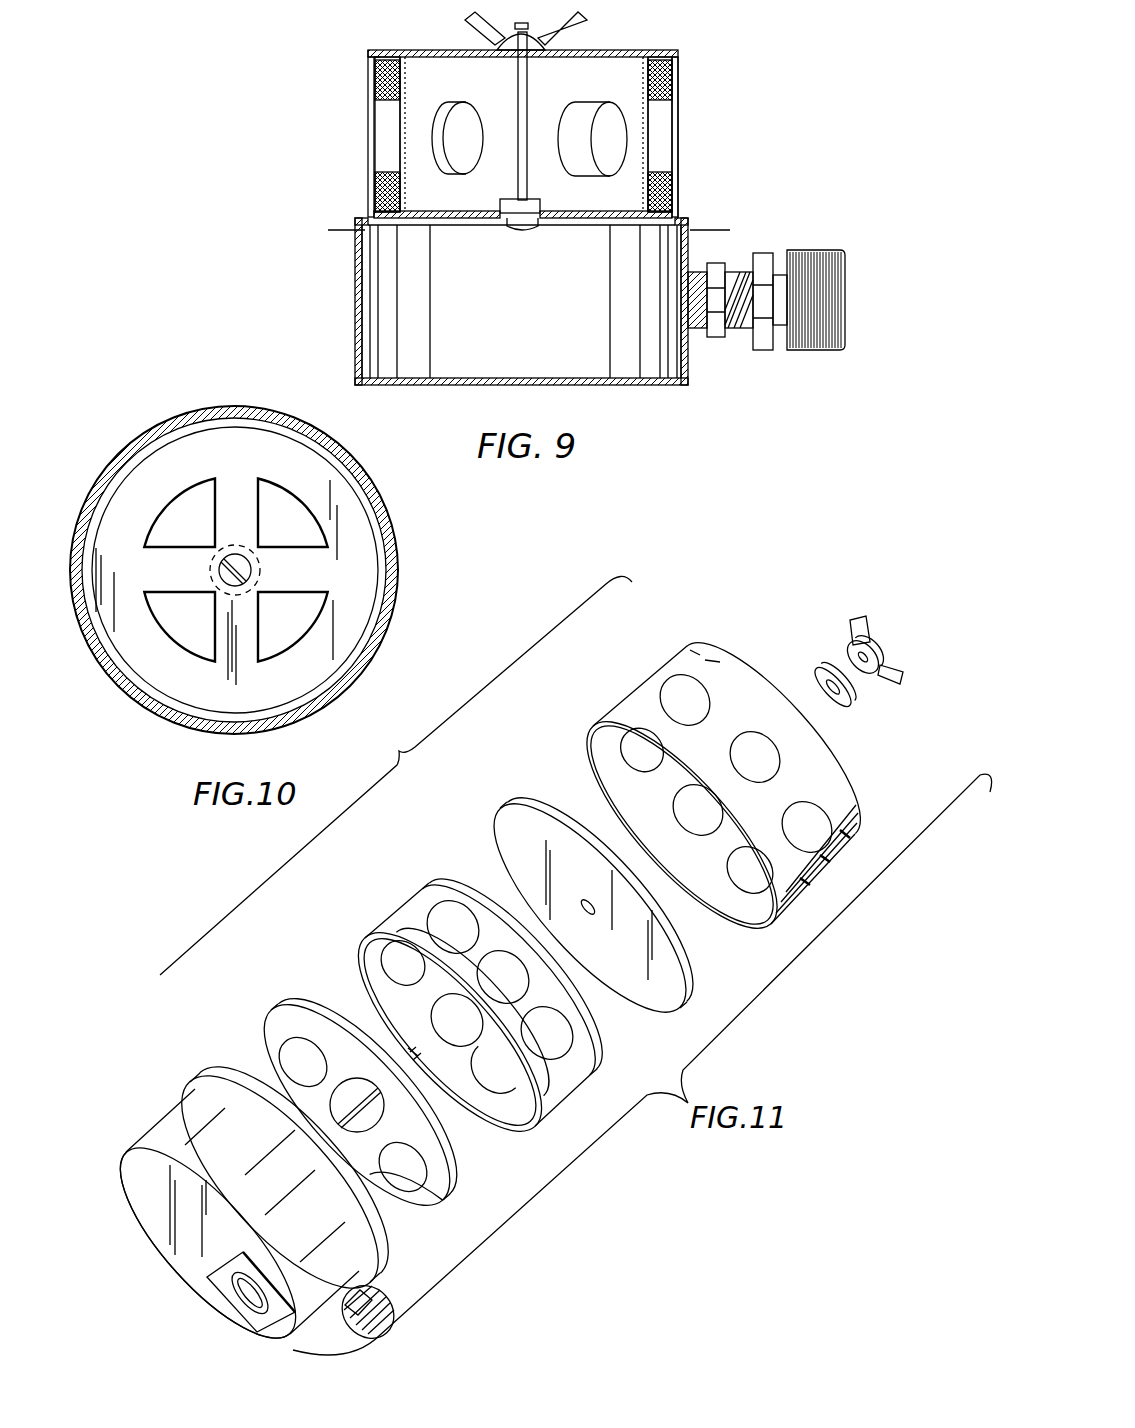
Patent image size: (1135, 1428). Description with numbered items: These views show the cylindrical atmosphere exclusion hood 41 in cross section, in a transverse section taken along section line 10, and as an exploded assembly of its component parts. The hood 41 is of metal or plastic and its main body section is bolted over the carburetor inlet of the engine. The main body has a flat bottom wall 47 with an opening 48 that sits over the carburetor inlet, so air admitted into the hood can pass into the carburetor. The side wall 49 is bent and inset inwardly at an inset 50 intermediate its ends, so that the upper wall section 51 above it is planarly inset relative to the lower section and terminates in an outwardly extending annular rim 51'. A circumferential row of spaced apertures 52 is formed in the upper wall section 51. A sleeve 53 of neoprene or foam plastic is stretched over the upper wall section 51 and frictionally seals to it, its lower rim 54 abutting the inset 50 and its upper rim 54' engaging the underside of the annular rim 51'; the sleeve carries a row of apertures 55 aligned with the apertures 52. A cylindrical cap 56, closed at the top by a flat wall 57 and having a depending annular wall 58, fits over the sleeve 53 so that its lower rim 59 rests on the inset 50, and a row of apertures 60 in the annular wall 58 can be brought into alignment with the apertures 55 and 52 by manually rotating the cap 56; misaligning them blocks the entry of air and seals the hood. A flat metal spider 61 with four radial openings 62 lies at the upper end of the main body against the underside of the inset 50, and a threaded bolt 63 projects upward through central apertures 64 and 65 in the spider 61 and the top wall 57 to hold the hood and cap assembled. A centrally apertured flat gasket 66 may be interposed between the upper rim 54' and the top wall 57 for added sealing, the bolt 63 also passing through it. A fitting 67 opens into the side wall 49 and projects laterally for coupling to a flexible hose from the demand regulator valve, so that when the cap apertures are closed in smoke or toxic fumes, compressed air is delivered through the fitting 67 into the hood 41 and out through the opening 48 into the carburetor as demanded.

In FIG. 9, the section line 10 is at (336, 232).
In FIG. 9, the cylindrical hood 41 is at (720, 137).
In FIG. 11, the cylindrical hood 41 is at (576, 965).
In FIG. 9, the flat bottom wall 47 is at (570, 386).
In FIG. 11, the flat bottom wall 47 is at (145, 1175).
In FIG. 9, the opening 48 is at (638, 387).
In FIG. 11, the opening 48 is at (248, 1305).
In FIG. 9, the side wall 49 is at (355, 305).
In FIG. 11, the side wall 49 is at (253, 1152).
In FIG. 11, the inset 50 is at (240, 1075).
In FIG. 11, the upper wall section 51 is at (361, 1082).
In FIG. 11, the annular rim 51' is at (423, 1190).
In FIG. 9, the apertures 52 is at (402, 145).
In FIG. 11, the apertures 52 is at (440, 1187).
In FIG. 11, the sleeve 53 is at (418, 895).
In FIG. 11, the lower rim 54 is at (459, 1035).
In FIG. 11, the upper rim 54' is at (525, 951).
In FIG. 9, the apertures 55 is at (388, 128).
In FIG. 11, the apertures 55 is at (563, 1030).
In FIG. 9, the cylindrical cap 56 is at (688, 95).
In FIG. 11, the cylindrical cap 56 is at (697, 648).
In FIG. 9, the flat top wall 57 is at (383, 52).
In FIG. 9, the annular wall 58 is at (375, 82).
In FIG. 10, the annular wall 58 is at (350, 457).
In FIG. 11, the annular wall 58 is at (858, 830).
In FIG. 11, the lower rim 59 is at (595, 735).
In FIG. 9, the apertures 60 is at (370, 157).
In FIG. 11, the apertures 60 is at (757, 757).
In FIG. 9, the spider 61 is at (415, 220).
In FIG. 10, the spider 61 is at (310, 650).
In FIG. 9, the radial openings 62 is at (485, 212).
In FIG. 10, the radial openings 62 is at (305, 600).
In FIG. 9, the threaded bolt 63 is at (527, 135).
In FIG. 10, the threaded bolt 63 is at (243, 570).
In FIG. 11, the threaded bolt 63 is at (355, 1100).
In FIG. 9, the central aperture 64 is at (528, 228).
In FIG. 9, the central aperture 65 is at (530, 45).
In FIG. 9, the flat gasket 66 is at (460, 58).
In FIG. 11, the flat gasket 66 is at (660, 975).
In FIG. 9, the fitting 67 is at (718, 330).
In FIG. 11, the fitting 67 is at (378, 1290).